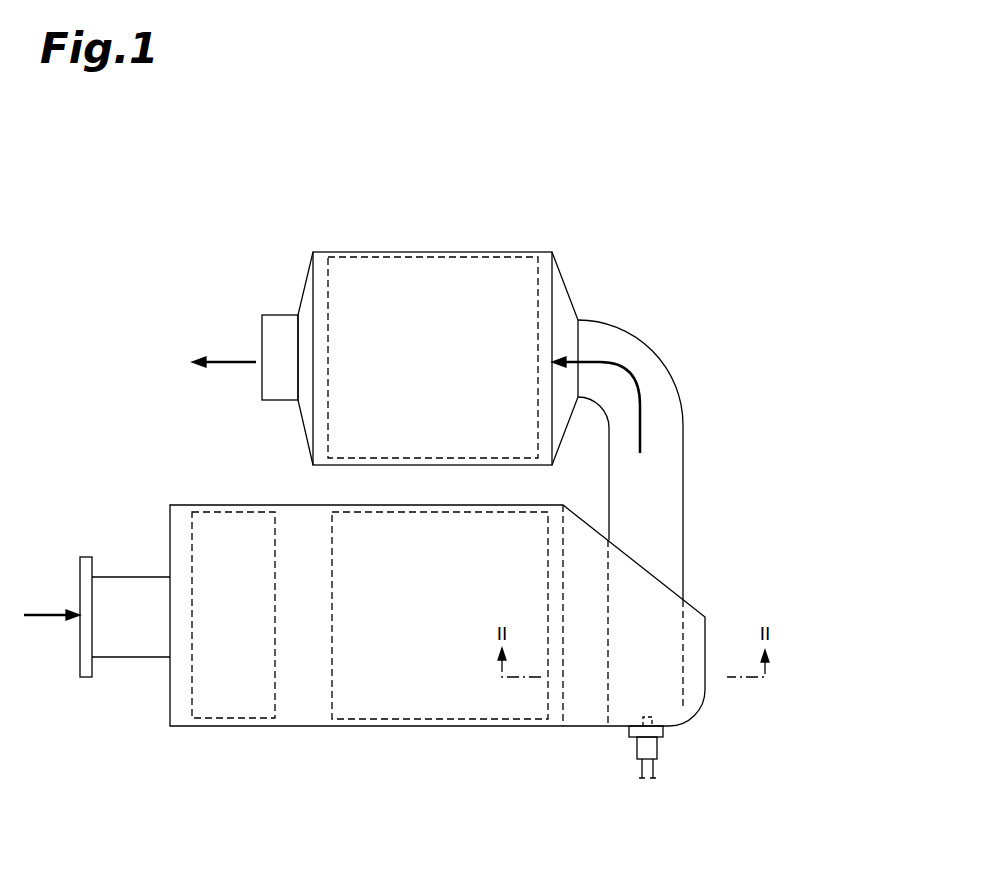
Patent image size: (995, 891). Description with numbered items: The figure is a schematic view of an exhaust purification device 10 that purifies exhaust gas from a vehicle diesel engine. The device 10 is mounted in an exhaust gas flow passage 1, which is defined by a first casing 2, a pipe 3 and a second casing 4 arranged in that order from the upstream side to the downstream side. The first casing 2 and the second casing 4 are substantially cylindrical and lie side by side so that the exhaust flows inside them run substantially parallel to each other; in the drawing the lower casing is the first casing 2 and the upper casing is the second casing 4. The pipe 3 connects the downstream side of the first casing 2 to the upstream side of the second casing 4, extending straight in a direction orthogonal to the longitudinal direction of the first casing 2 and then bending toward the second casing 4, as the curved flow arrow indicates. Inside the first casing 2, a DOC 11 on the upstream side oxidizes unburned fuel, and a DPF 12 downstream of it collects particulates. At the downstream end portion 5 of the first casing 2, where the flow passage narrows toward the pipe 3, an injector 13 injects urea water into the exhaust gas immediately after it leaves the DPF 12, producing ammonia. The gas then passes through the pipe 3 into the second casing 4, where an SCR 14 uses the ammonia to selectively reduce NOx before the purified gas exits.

The exhaust purification device 10 is at (619, 205).
The exhaust gas flow passage 1 is at (436, 493).
The first casing 2 is at (413, 742).
The pipe 3 is at (695, 472).
The second casing 4 is at (486, 242).
The downstream end portion 5 is at (585, 728).
The DOC 11 is at (225, 520).
The DPF 12 is at (360, 710).
The injector 13 is at (680, 758).
The SCR 14 is at (403, 275).